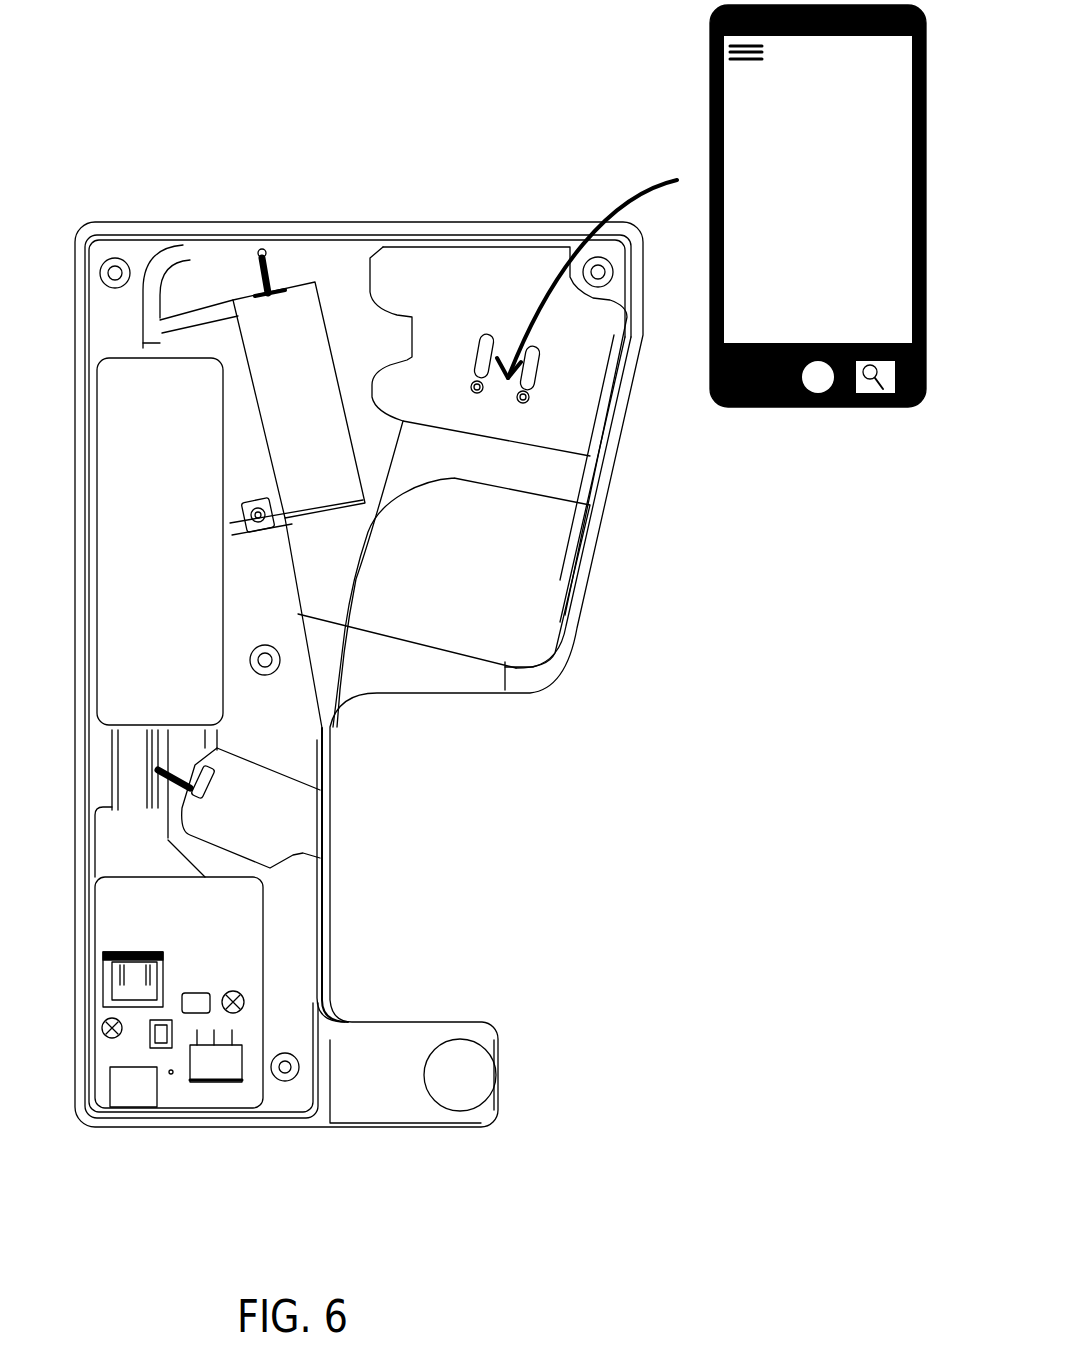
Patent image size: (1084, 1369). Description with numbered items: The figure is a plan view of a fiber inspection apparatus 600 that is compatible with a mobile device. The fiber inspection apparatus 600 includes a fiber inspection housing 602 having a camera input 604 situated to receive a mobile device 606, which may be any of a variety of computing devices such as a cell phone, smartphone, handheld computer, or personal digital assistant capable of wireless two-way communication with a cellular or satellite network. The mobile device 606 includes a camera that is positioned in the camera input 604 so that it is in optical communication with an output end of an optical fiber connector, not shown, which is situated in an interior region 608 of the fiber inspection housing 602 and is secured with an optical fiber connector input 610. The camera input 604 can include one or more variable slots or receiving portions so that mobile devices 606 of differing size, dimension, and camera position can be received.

The fiber inspection apparatus 600 is at (710, 908).
The fiber inspection housing 602 is at (575, 640).
The camera input 604 is at (655, 478).
The mobile device 606 is at (710, 117).
The interior region 608 is at (485, 850).
The optical fiber connector input 610 is at (505, 995).